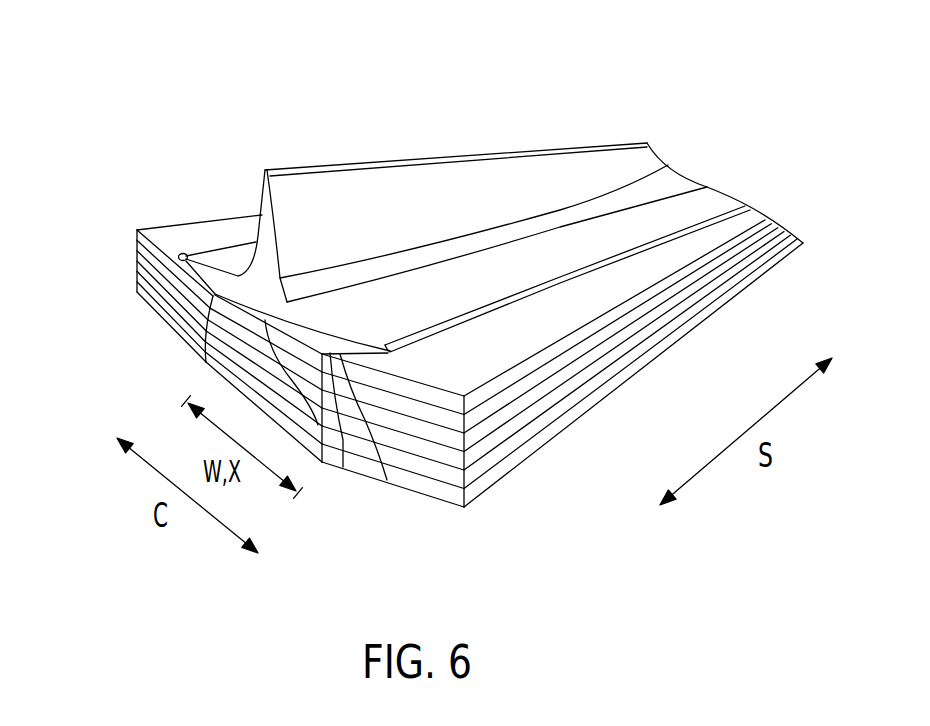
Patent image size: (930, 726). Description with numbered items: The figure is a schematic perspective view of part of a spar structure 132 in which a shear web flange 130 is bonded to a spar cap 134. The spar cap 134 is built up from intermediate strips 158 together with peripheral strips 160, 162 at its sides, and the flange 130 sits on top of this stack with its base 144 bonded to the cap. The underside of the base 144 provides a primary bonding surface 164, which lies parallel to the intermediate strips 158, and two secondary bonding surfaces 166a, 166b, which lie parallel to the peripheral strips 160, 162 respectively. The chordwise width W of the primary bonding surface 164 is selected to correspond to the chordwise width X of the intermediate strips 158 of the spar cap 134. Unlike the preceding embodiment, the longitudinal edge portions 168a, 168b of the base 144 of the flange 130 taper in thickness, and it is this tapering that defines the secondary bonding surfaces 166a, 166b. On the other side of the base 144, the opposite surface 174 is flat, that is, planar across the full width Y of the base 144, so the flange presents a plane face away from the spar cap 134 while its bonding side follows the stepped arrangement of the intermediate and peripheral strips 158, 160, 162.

The flange 130 is at (368, 140).
The spar structure 132 is at (108, 94).
The spar cap 134 is at (68, 445).
The base 144 is at (287, 300).
The intermediate strips 158 is at (220, 359).
The peripheral strip 160 is at (137, 268).
The peripheral strip 162 is at (448, 487).
The primary bonding surface 164 is at (343, 467).
The secondary bonding surface 166a is at (183, 253).
The secondary bonding surface 166b is at (387, 480).
The longitudinal edge portion 168a is at (203, 273).
The longitudinal edge portion 168b is at (345, 336).
The opposite surface 174 is at (545, 245).